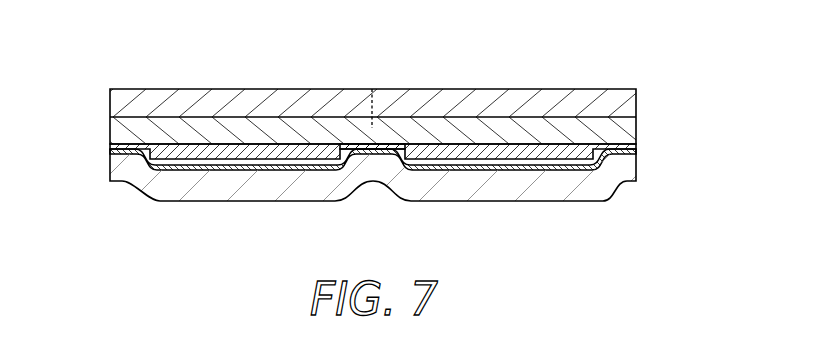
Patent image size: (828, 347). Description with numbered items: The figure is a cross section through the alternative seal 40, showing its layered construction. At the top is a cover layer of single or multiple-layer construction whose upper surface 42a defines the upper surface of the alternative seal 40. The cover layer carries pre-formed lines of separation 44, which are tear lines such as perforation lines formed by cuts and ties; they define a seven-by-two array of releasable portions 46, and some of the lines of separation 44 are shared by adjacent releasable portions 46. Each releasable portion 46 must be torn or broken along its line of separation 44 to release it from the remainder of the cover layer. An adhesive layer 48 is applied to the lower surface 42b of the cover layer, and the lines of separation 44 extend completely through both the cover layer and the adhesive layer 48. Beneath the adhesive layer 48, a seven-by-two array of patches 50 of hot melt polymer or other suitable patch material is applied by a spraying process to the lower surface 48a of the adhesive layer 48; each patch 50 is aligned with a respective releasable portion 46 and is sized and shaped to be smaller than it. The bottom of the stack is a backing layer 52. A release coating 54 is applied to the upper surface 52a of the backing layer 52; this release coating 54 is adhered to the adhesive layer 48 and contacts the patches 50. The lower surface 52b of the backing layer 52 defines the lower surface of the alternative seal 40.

The alternative seal 40 is at (375, 151).
The upper surface of the cover layer 42a is at (140, 88).
The lower surface of the cover layer 42b is at (400, 117).
The lines of separation 44 is at (370, 96).
The releasable portions 46 is at (217, 100).
The adhesive layer 48 is at (533, 127).
The lower surface of the adhesive layer 48a is at (352, 150).
The patches 50 is at (373, 201).
The backing layer 52 is at (373, 203).
The upper surface of the backing layer 52a is at (429, 178).
The lower surface of the backing layer 52b is at (283, 201).
The release coating 54 is at (640, 153).